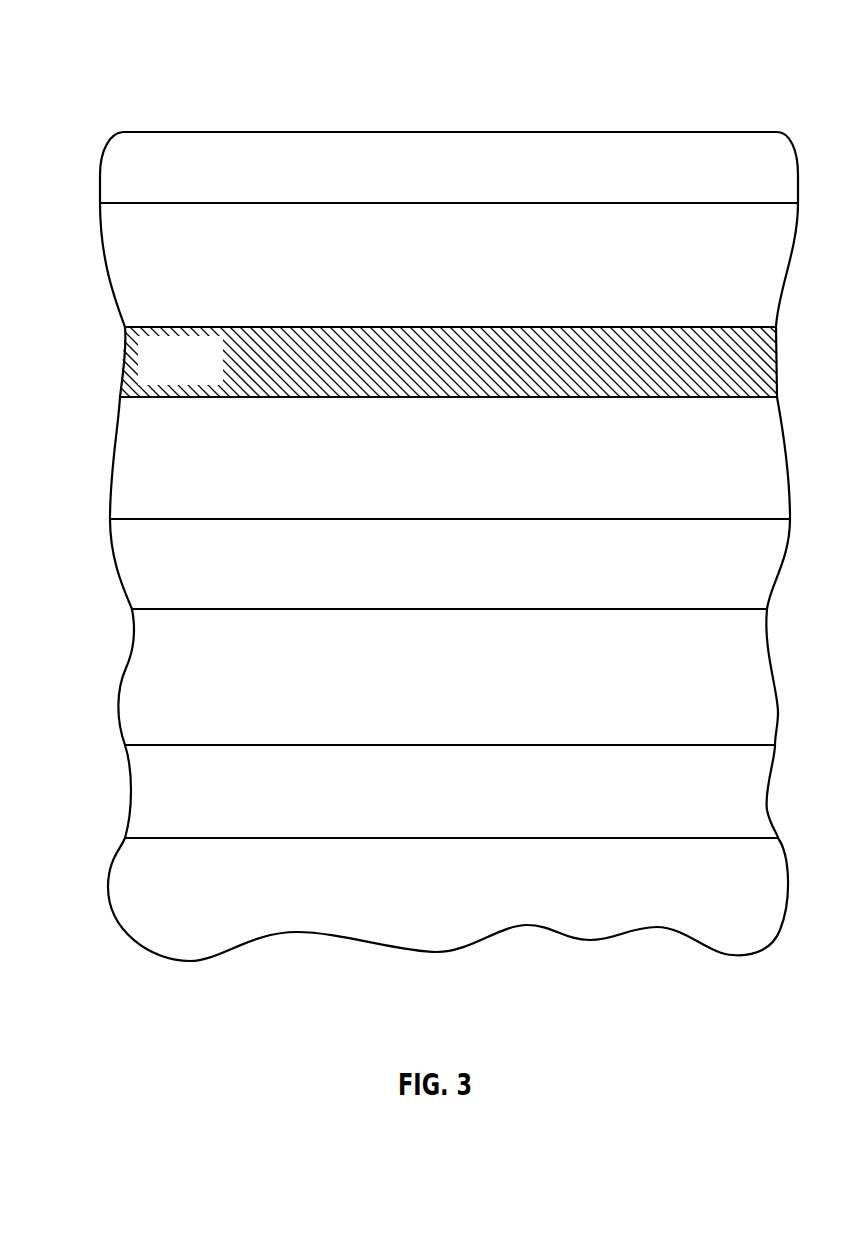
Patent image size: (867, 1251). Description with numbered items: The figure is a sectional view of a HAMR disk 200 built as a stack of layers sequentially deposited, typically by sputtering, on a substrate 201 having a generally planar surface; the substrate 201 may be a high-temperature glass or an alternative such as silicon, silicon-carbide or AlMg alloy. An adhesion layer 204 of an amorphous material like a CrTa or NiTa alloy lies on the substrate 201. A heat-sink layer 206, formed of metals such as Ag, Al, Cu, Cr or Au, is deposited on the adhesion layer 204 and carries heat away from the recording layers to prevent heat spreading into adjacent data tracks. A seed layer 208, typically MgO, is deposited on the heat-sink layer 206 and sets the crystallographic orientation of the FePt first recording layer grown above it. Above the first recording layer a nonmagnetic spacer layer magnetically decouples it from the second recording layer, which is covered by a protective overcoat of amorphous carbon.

The HAMR disk 200 is at (440, 509).
The substrate 201 is at (110, 917).
The adhesion layer 204 is at (128, 812).
The heat-sink layer 206 is at (120, 702).
The seed layer 208 is at (118, 590).